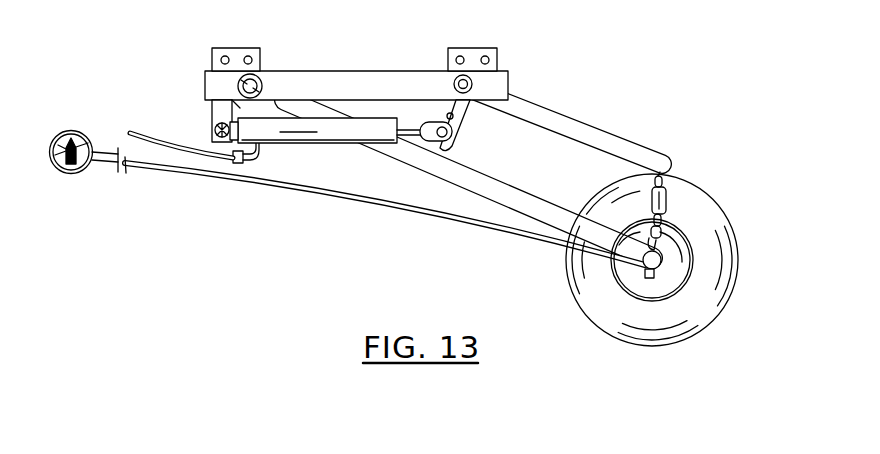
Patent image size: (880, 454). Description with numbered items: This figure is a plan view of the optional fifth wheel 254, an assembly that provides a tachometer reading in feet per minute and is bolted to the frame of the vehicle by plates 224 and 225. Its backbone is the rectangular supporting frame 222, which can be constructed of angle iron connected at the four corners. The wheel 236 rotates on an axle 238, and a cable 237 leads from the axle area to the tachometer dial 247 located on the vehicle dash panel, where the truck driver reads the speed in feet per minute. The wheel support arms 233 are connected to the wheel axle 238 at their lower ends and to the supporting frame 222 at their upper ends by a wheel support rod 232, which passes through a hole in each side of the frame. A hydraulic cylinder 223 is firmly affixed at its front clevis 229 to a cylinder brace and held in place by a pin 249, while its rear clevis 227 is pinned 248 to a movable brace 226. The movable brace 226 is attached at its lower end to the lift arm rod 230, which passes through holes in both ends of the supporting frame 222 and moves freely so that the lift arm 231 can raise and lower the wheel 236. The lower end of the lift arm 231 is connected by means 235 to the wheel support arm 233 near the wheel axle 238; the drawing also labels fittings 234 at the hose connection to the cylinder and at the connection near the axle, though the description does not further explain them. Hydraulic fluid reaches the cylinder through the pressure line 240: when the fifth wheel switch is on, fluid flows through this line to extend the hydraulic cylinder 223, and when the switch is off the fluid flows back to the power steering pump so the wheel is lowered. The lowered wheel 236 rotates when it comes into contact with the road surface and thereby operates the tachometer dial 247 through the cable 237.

The supporting frame 222 is at (357, 71).
The hydraulic cylinder 223 is at (328, 145).
The plate 224 is at (238, 47).
The plate 225 is at (474, 47).
The movable brace 226 is at (446, 114).
The rear clevis 227 is at (443, 142).
The front clevis 229 is at (214, 126).
The lift arm rod 230 is at (453, 83).
The lift arm 231 is at (575, 123).
The wheel support rod 232 is at (242, 82).
The wheel support arm 233 is at (533, 193).
The fitting 234 is at (647, 240).
The connecting means 235 is at (666, 207).
The wheel 236 is at (738, 266).
The cable 237 is at (367, 200).
The axle 238 is at (643, 270).
The pressure line 240 is at (152, 135).
The tachometer dial 247 is at (73, 173).
The pin 248 is at (457, 128).
The pin 249 is at (215, 120).
The fifth wheel 254 is at (620, 96).